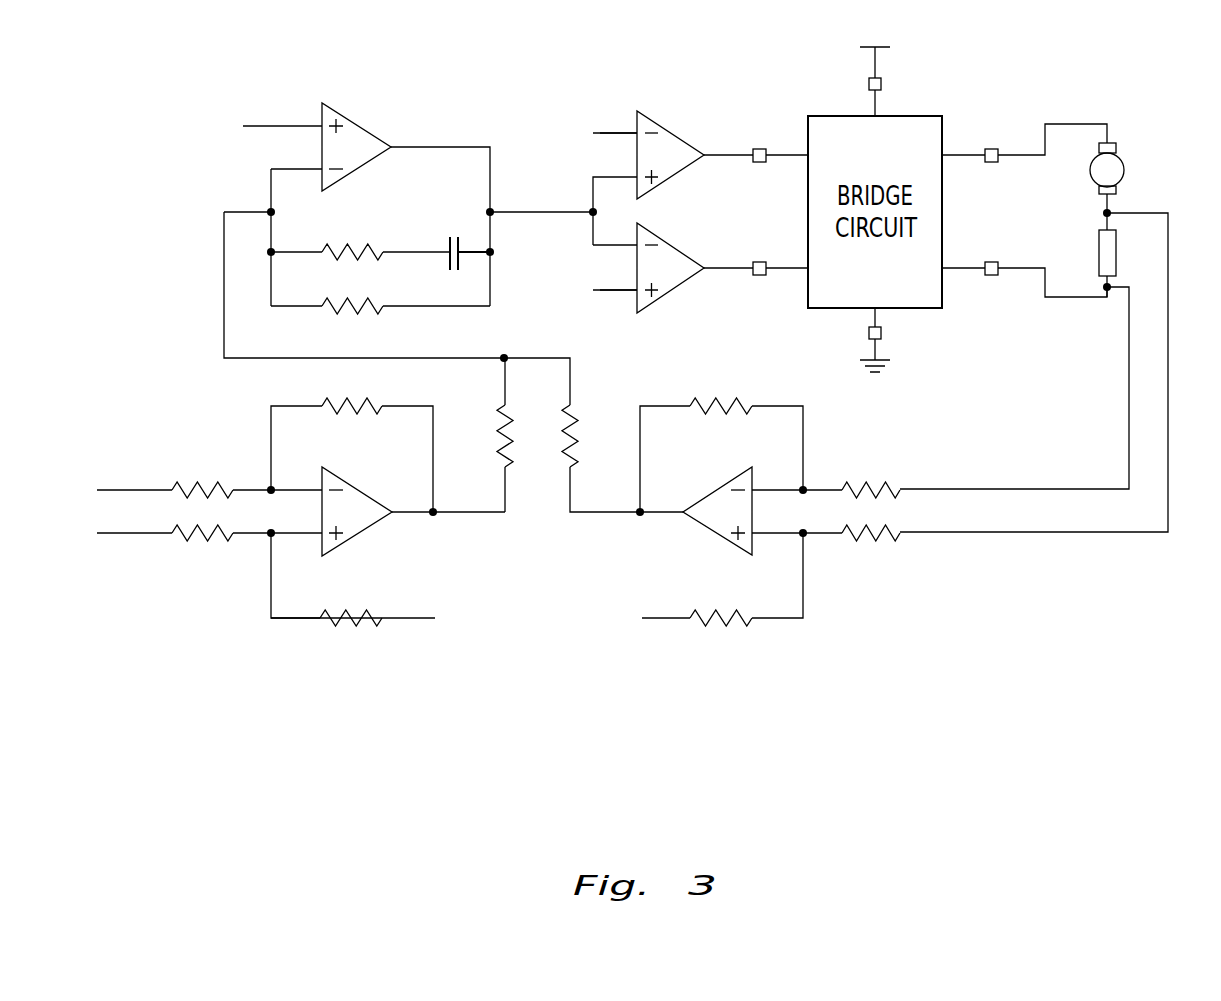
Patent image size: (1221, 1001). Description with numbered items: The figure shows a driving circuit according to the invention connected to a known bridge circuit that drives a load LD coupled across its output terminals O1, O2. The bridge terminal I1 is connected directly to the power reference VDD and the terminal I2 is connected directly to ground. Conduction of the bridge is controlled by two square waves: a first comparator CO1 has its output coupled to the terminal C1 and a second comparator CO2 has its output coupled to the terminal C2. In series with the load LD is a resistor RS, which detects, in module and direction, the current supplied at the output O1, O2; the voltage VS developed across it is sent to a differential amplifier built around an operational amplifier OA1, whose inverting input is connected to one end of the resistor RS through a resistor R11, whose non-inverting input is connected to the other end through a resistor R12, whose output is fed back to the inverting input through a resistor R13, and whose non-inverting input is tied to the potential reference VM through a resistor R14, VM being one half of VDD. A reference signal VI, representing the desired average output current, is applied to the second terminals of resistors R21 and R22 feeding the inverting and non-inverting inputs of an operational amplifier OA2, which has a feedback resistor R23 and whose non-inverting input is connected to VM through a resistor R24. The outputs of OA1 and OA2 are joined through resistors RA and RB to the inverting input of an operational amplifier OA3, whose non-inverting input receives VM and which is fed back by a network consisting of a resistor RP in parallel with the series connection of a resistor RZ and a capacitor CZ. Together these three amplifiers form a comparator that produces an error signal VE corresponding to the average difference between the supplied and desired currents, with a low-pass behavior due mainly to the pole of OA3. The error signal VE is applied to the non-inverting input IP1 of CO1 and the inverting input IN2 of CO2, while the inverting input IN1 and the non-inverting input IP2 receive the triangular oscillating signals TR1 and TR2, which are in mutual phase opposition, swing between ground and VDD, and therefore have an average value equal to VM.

The operational amplifier OA1 is at (720, 518).
The operational amplifier OA2 is at (353, 518).
The operational amplifier OA3 is at (357, 142).
The first comparator CO1 is at (670, 152).
The second comparator CO2 is at (668, 273).
The resistor R11 is at (826, 474).
The resistor R12 is at (826, 550).
The resistor R13 is at (721, 439).
The resistor R14 is at (746, 598).
The resistor R21 is at (247, 474).
The resistor R22 is at (247, 550).
The resistor R23 is at (352, 439).
The resistor R24 is at (326, 598).
The resistor RA is at (593, 435).
The resistor RB is at (488, 435).
The resistor RZ is at (360, 236).
The capacitor CZ is at (465, 236).
The resistor RP is at (380, 323).
The resistor RS is at (1102, 255).
The load LD is at (1115, 173).
The terminal I1 is at (888, 93).
The terminal I2 is at (884, 340).
The output terminal O1 is at (1024, 140).
The output terminal O2 is at (1024, 265).
The terminal C1 is at (756, 140).
The terminal C2 is at (756, 253).
The power reference VDD is at (875, 47).
The potential reference VM is at (447, 372).
The error signal VE is at (492, 210).
The reference signal VI is at (111, 497).
The voltage VS is at (1004, 495).
The oscillating signal TR1 is at (594, 133).
The oscillating signal TR2 is at (592, 288).
The inverting input IN1 is at (618, 117).
The non-inverting input IP1 is at (615, 195).
The inverting input IN2 is at (615, 230).
The non-inverting input IP2 is at (618, 275).